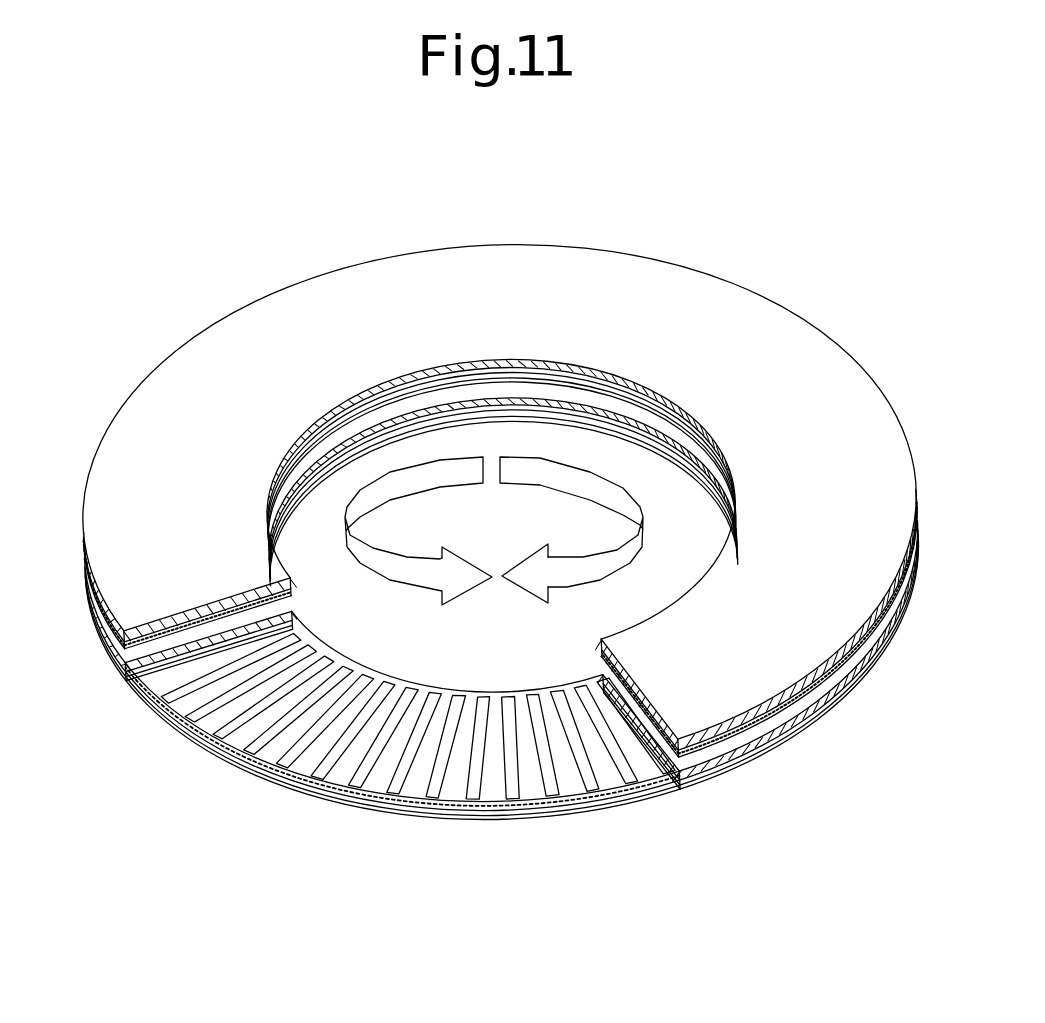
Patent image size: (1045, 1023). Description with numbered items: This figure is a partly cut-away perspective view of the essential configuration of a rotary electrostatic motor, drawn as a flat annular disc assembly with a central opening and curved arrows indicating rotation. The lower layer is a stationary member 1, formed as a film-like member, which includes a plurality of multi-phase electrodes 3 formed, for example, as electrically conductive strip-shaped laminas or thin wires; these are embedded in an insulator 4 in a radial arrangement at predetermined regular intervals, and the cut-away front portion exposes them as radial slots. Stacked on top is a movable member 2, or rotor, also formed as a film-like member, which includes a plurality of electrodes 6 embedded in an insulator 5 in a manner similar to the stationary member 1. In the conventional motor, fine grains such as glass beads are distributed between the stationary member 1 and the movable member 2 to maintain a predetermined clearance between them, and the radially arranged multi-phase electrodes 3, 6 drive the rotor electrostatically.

The stationary member 1 is at (210, 756).
The movable member 2 is at (868, 527).
The multi-phase electrodes 3 is at (510, 793).
The insulator 4 is at (113, 653).
The insulator 5 is at (138, 388).
The electrodes 6 is at (151, 641).